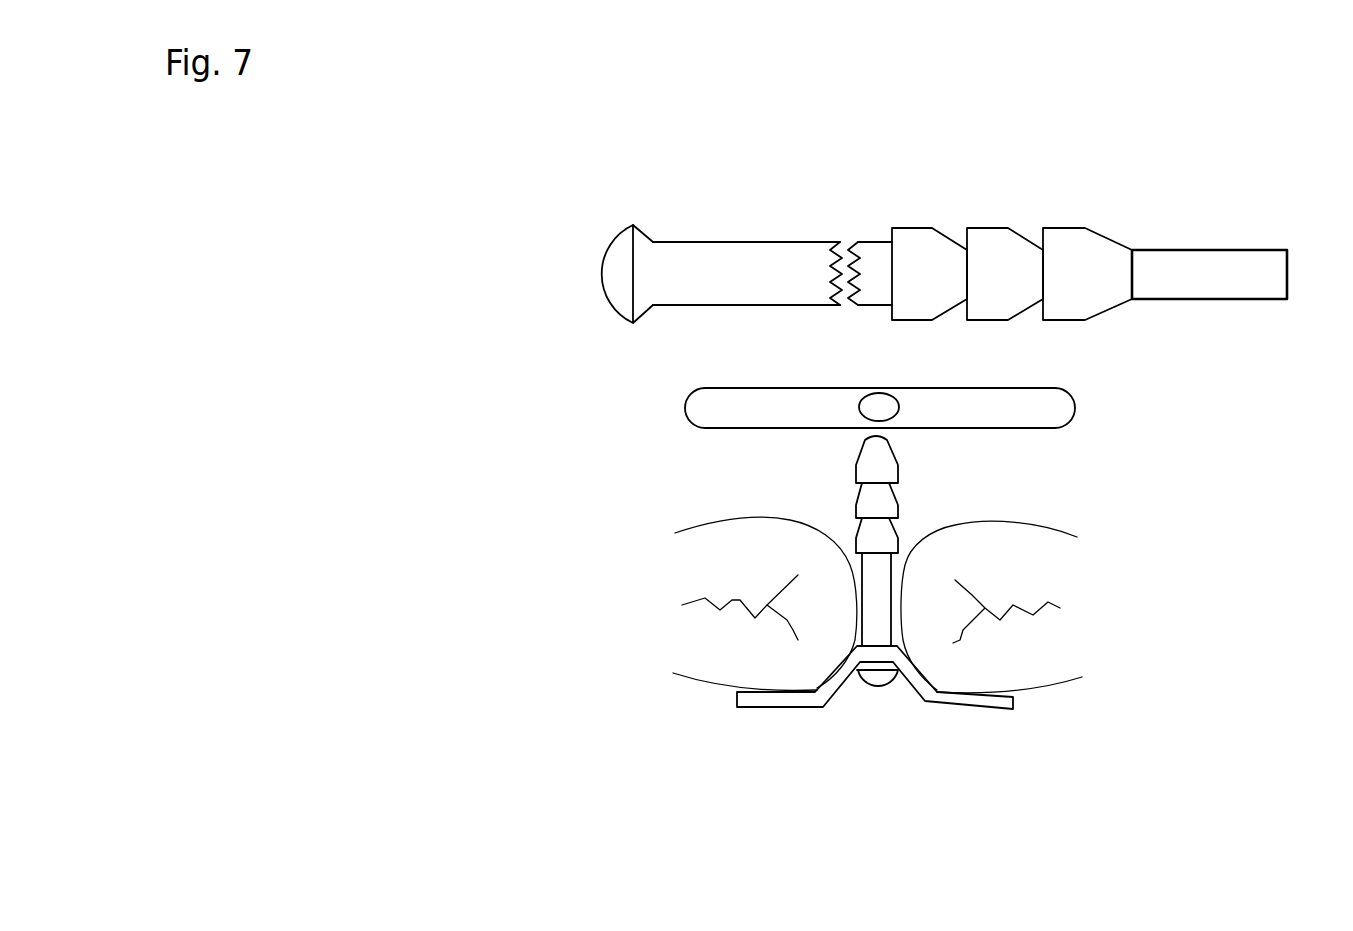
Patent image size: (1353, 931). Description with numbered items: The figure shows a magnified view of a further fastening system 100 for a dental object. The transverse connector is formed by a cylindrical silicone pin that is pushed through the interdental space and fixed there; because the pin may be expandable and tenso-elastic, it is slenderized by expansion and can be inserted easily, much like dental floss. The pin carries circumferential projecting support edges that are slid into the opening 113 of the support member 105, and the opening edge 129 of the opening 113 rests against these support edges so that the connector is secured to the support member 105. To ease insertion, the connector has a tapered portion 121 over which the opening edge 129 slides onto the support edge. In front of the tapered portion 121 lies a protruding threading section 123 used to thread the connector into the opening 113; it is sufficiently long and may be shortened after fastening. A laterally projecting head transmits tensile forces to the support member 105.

The fastening system 100 is at (1005, 174).
The support member 105 is at (763, 695).
The opening 113 is at (873, 403).
The tapered portion 121 is at (947, 235).
The threading section 123 is at (1182, 250).
The opening edge 129 is at (902, 410).